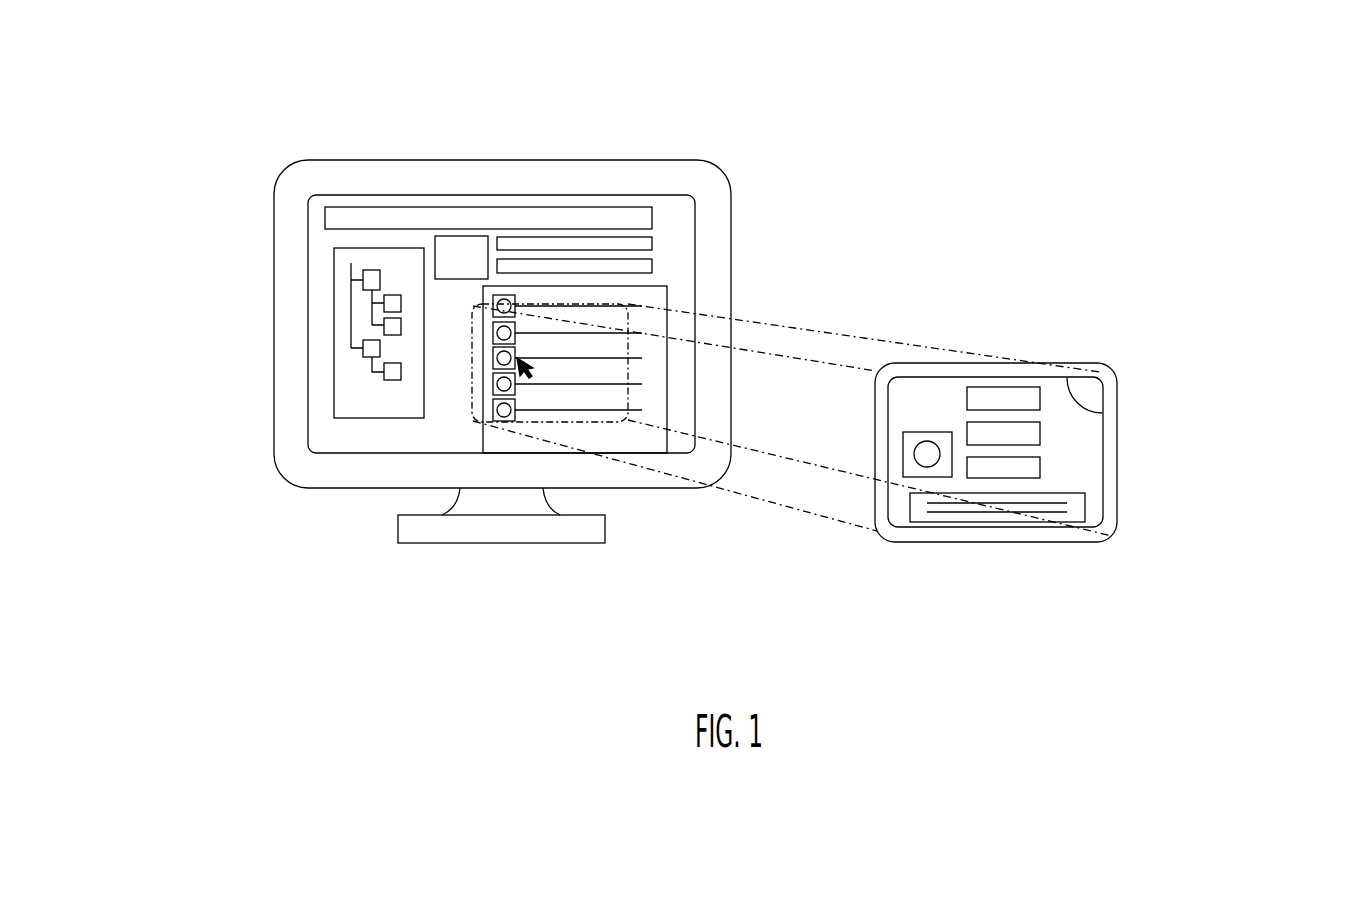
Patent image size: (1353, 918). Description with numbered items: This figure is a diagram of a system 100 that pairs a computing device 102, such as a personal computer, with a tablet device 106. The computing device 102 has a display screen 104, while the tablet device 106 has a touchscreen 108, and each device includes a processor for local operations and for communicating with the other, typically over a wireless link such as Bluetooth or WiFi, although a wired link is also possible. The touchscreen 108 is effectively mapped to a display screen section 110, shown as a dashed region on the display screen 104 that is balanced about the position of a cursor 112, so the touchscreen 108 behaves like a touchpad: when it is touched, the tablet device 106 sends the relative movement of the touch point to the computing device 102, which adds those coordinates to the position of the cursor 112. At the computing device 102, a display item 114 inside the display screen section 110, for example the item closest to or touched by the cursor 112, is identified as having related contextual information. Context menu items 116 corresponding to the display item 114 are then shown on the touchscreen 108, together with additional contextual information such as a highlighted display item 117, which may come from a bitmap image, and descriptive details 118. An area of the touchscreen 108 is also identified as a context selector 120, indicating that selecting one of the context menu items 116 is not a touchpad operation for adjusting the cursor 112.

The system 100 is at (1208, 76).
The computing device 102 is at (391, 101).
The display screen 104 is at (226, 500).
The tablet device 106 is at (836, 638).
The touchscreen 108 is at (1223, 401).
The display screen section 110 is at (632, 346).
The cursor 112 is at (730, 101).
The display item 114 is at (175, 275).
The context menu items 116 is at (1032, 470).
The highlighted display item 117 is at (705, 594).
The details 118 is at (1175, 569).
The context selector 120 is at (1218, 305).